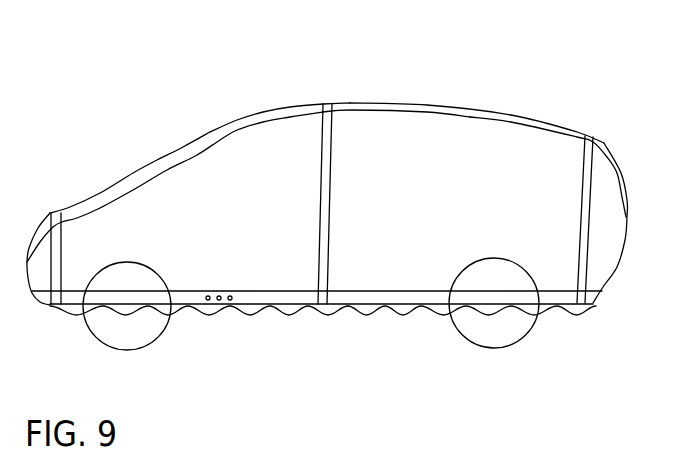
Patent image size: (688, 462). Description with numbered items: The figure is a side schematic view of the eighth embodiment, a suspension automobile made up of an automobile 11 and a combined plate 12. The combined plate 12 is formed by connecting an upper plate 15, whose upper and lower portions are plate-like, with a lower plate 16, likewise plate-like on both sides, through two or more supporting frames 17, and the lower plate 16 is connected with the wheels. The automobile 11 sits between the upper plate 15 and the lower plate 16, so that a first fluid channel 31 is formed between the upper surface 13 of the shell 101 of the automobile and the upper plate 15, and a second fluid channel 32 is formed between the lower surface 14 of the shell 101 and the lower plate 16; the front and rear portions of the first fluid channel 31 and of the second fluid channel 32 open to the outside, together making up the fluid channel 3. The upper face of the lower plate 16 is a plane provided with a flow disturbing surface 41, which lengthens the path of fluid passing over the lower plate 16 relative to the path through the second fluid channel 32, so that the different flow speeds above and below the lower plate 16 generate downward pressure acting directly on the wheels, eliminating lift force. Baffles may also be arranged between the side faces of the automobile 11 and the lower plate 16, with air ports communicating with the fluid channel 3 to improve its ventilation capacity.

The shell 101 is at (578, 112).
The fluid channel 3 is at (252, 117).
The automobile 11 is at (197, 155).
The combined plate 12 is at (157, 160).
The upper surface 13 is at (379, 112).
The lower surface 14 is at (354, 291).
The upper plate 15 is at (426, 105).
The lower plate 16 is at (421, 305).
The supporting frame 17 is at (322, 168).
The first fluid channel 31 is at (462, 110).
The second fluid channel 32 is at (307, 298).
The flow disturbing surface 41 is at (273, 311).